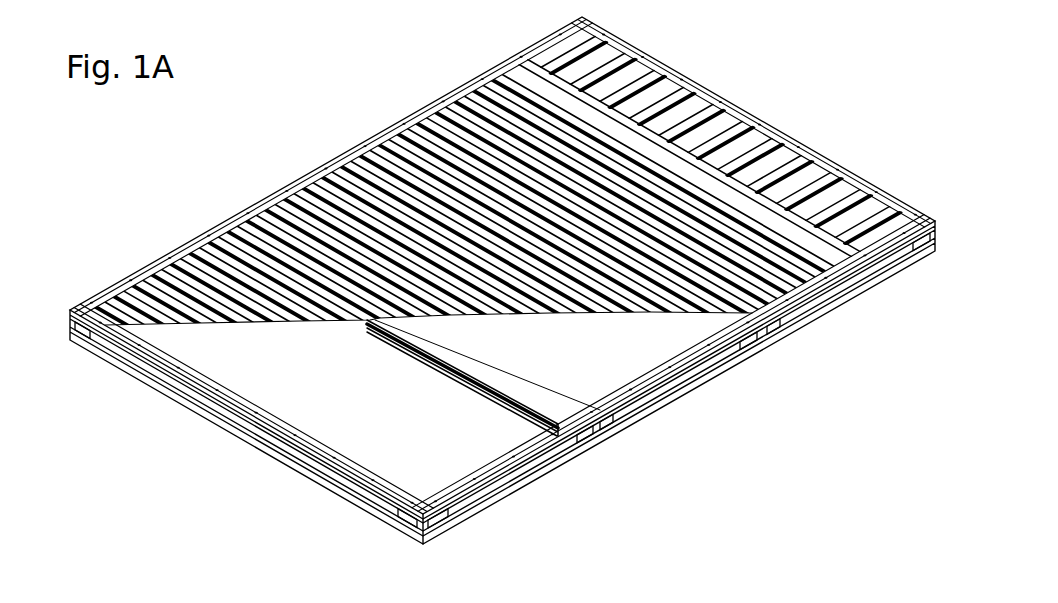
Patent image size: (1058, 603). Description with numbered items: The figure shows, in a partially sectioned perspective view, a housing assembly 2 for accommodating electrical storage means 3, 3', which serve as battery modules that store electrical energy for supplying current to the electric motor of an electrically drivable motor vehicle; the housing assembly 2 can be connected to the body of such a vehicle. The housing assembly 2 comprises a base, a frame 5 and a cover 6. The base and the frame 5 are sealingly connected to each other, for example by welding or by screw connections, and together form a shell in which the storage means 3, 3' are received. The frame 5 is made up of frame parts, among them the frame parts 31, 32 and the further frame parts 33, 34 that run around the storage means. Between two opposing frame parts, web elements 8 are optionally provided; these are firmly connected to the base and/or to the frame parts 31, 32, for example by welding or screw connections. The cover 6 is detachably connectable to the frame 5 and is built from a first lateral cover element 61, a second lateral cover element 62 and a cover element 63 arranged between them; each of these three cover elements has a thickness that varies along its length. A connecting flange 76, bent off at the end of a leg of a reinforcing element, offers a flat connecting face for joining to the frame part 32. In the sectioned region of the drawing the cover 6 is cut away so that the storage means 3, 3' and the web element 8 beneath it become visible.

The housing assembly 2 is at (331, 129).
The electrical storage means 3 is at (476, 493).
The electrical storage means 3' is at (562, 381).
The frame 5 is at (283, 461).
The cover 6 is at (406, 158).
The web element 8 is at (548, 415).
The frame part 31 is at (208, 220).
The frame part 32 is at (795, 320).
The end rail 33 is at (860, 163).
The end rail 34 is at (230, 420).
The first lateral cover element 61 is at (134, 317).
The second lateral cover element 62 is at (763, 160).
The cover element 63 is at (484, 112).
The connecting flange 76 is at (684, 90).